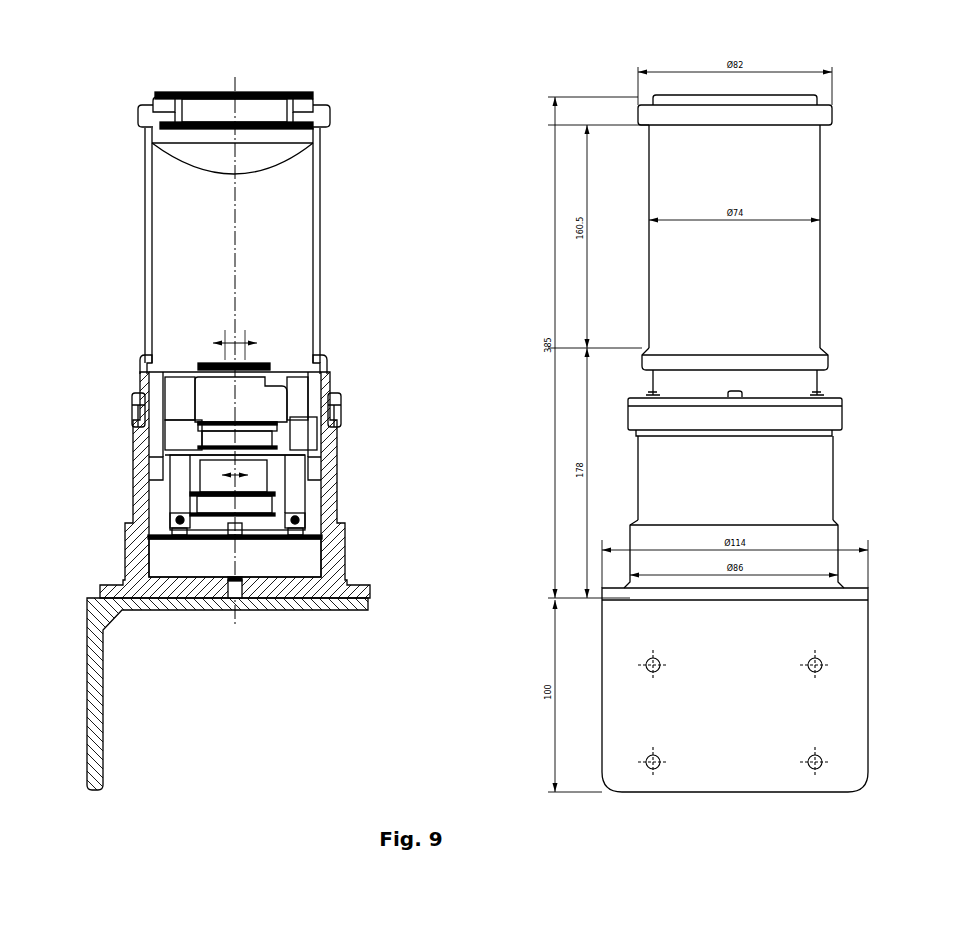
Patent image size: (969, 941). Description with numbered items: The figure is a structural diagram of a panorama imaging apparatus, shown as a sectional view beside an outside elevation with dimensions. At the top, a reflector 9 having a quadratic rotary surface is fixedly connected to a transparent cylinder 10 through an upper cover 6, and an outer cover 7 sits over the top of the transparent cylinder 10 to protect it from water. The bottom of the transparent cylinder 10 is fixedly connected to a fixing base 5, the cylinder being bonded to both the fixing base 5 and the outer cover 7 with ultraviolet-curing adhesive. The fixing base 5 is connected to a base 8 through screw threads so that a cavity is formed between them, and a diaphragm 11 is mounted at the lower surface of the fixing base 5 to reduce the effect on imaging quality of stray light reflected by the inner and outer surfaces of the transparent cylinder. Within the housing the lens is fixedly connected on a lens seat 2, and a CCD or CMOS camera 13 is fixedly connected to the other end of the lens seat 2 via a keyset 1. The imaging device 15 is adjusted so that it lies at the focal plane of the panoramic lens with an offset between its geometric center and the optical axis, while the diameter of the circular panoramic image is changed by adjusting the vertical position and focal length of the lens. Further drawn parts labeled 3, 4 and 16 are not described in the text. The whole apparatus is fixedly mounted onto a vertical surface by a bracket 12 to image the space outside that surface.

The keyset 1 is at (136, 503).
The lens seat 2 is at (142, 468).
The motor 3 is at (310, 505).
The mounting plate 4 is at (293, 431).
The fixing base 5 is at (285, 392).
The upper cover 6 is at (307, 99).
The outer cover 7 is at (263, 95).
The base 8 is at (325, 537).
The reflector 9 is at (320, 145).
The transparent cylinder 10 is at (140, 107).
The diaphragm 11 is at (238, 364).
The bracket 12 is at (323, 612).
The CCD or CMOS camera 13 is at (268, 473).
The imaging device 15 is at (145, 412).
The lower cavity 16 is at (328, 540).